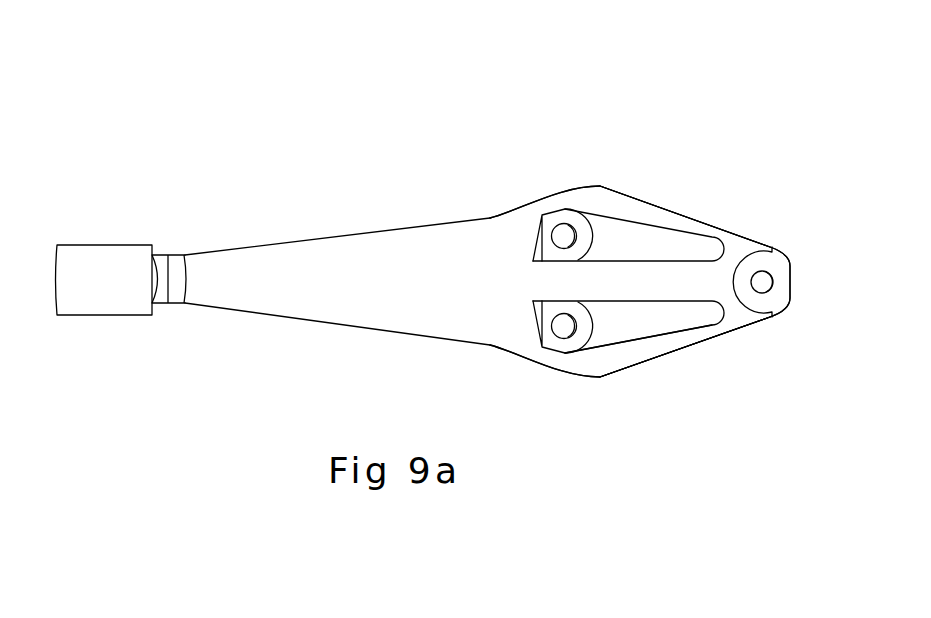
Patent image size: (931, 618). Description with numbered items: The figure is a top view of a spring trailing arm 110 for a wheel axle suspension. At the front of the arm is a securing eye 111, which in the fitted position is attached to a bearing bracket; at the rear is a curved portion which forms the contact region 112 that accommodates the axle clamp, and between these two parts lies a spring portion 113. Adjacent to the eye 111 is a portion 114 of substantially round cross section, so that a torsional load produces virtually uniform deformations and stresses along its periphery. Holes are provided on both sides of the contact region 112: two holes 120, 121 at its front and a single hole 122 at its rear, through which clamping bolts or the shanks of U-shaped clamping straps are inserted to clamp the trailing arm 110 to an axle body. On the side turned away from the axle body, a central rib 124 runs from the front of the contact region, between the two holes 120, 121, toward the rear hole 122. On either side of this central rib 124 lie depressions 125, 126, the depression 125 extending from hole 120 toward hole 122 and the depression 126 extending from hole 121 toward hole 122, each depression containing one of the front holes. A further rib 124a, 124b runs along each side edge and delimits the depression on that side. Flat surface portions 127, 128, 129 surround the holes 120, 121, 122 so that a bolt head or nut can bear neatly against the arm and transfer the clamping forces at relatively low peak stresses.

The spring trailing arm 110 is at (275, 78).
The securing eye 111 is at (80, 243).
The contact region 112 is at (694, 197).
The spring portion 113 is at (340, 232).
The portion with substantially round cross section 114 is at (168, 252).
The hole 120 is at (560, 229).
The hole 121 is at (563, 333).
The hole 122 is at (770, 292).
The central rib 124 is at (715, 313).
The further rib 124a is at (632, 362).
The further rib 124b is at (630, 208).
The depression 125 is at (653, 247).
The depression 126 is at (638, 323).
The flat surface portion 127 is at (550, 253).
The flat surface portion 128 is at (543, 308).
The flat surface portion 129 is at (777, 263).